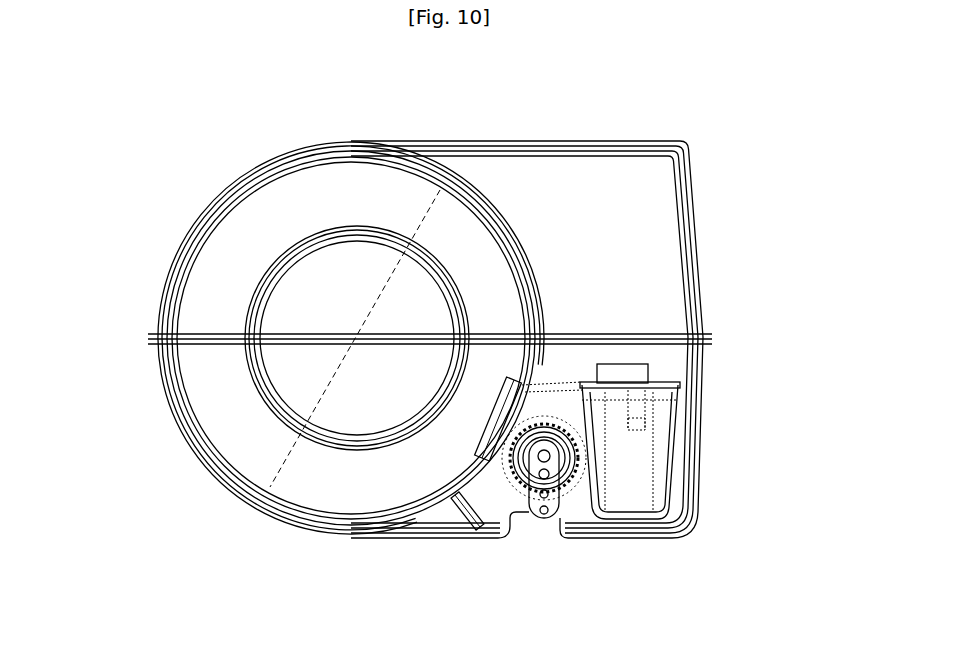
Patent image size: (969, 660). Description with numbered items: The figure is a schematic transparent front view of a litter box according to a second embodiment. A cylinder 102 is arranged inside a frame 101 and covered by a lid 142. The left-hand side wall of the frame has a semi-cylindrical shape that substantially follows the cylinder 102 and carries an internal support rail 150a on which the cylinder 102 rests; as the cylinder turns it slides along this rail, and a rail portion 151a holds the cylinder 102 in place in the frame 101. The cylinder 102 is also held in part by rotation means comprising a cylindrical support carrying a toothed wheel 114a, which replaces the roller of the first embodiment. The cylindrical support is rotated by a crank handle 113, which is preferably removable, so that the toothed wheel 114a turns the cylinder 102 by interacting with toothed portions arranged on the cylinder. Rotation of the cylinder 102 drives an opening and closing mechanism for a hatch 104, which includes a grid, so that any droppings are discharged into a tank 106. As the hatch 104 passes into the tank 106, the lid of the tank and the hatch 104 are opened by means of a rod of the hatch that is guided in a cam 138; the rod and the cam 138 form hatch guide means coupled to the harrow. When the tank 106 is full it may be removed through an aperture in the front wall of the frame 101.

The frame 101 is at (293, 364).
The cylinder 102 is at (264, 310).
The hatch 104 is at (626, 340).
The tank 106 is at (718, 467).
The crank handle 113 is at (487, 541).
The toothed wheel 114a is at (628, 515).
The cam 138 is at (714, 361).
The lid 142 is at (598, 299).
The internal support rail 150a is at (367, 550).
The rail portion 151a is at (353, 561).